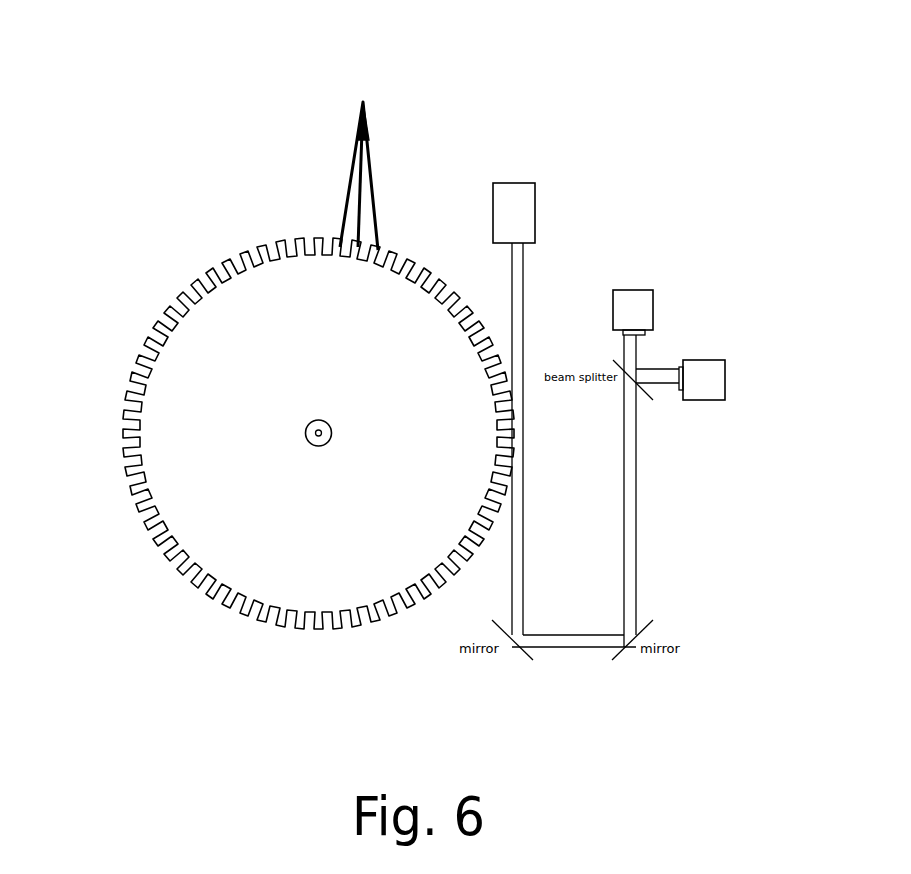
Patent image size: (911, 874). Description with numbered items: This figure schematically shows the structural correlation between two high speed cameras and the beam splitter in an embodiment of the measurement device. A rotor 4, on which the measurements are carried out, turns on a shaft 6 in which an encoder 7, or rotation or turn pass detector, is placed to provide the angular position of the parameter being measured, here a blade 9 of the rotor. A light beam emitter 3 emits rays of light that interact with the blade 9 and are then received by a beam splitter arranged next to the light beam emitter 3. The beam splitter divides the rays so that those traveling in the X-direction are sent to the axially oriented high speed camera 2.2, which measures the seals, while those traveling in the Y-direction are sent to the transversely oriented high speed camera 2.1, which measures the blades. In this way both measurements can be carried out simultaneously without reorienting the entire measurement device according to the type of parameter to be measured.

The rotor 4 is at (222, 527).
The encoder 7 is at (310, 423).
The shaft 6 is at (316, 434).
The blade 9 is at (359, 160).
The light beam emitter 3 is at (510, 198).
The transversely oriented high speed camera 2.1 is at (637, 302).
The axially oriented high speed camera 2.2 is at (708, 372).